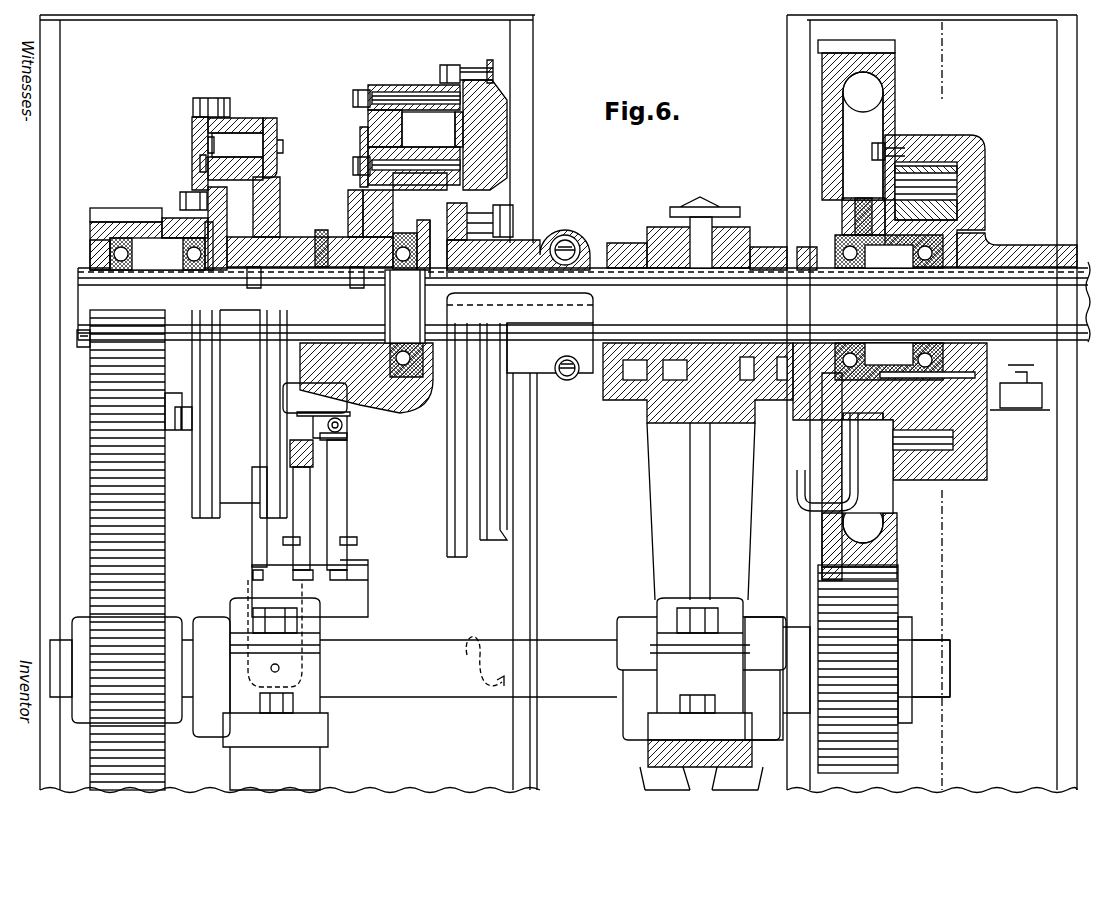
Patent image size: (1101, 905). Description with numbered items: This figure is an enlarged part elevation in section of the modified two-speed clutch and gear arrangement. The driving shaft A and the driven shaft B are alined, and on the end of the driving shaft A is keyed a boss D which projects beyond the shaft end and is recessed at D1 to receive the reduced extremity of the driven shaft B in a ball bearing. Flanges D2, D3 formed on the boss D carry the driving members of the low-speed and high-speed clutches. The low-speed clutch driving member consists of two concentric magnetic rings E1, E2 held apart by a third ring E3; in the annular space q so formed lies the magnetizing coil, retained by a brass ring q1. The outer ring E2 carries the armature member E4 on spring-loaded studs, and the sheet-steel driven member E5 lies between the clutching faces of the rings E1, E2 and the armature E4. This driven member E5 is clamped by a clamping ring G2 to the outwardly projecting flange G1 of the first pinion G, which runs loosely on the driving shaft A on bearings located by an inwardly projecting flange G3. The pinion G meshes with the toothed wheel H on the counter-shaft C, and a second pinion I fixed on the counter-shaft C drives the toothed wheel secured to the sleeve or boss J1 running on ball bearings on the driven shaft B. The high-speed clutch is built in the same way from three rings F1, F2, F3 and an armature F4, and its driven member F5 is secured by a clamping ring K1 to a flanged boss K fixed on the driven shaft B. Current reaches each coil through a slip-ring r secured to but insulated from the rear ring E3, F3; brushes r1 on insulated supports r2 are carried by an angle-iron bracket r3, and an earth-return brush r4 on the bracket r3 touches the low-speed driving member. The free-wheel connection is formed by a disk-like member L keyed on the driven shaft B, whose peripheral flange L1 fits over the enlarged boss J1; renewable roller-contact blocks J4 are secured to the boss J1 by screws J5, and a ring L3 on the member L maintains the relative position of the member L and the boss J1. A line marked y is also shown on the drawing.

The driving shaft A is at (82, 348).
The driven shaft B is at (598, 268).
The counter-shaft C is at (455, 665).
The boss D is at (360, 240).
The recess D1 is at (410, 392).
The flange D2 is at (320, 240).
The flange D3 is at (365, 232).
The inner ring E1 is at (244, 150).
The outer ring E2 is at (237, 120).
The third ring E3 is at (278, 130).
The armature member E4 is at (200, 145).
The driven member E5 is at (200, 108).
The ring F1 is at (440, 147).
The ring F2 is at (420, 86).
The ring F3 is at (378, 88).
The armature F4 is at (500, 148).
The driven member F5 is at (470, 195).
The first pinion G is at (128, 232).
The outwardly projecting flange G1 is at (185, 222).
The clamping ring G2 is at (222, 246).
The inwardly projecting flange G3 is at (92, 248).
The toothed wheel H is at (105, 540).
The second pinion I is at (868, 613).
The sleeve or boss J1 is at (960, 405).
The blocks J4 is at (962, 200).
The screws J5 is at (835, 208).
The flanged boss K is at (536, 240).
The clamping ring K1 is at (452, 220).
The disk-like member L is at (968, 240).
The peripheral flange L1 is at (928, 140).
The ring L3 is at (890, 142).
The annular space q is at (195, 126).
The ring q1 is at (204, 170).
The slip-ring r is at (356, 140).
The brushes r1 is at (362, 412).
The support r2 is at (347, 540).
The bracket r3 is at (356, 598).
The brush r4 is at (258, 520).
The section line y is at (952, 404).